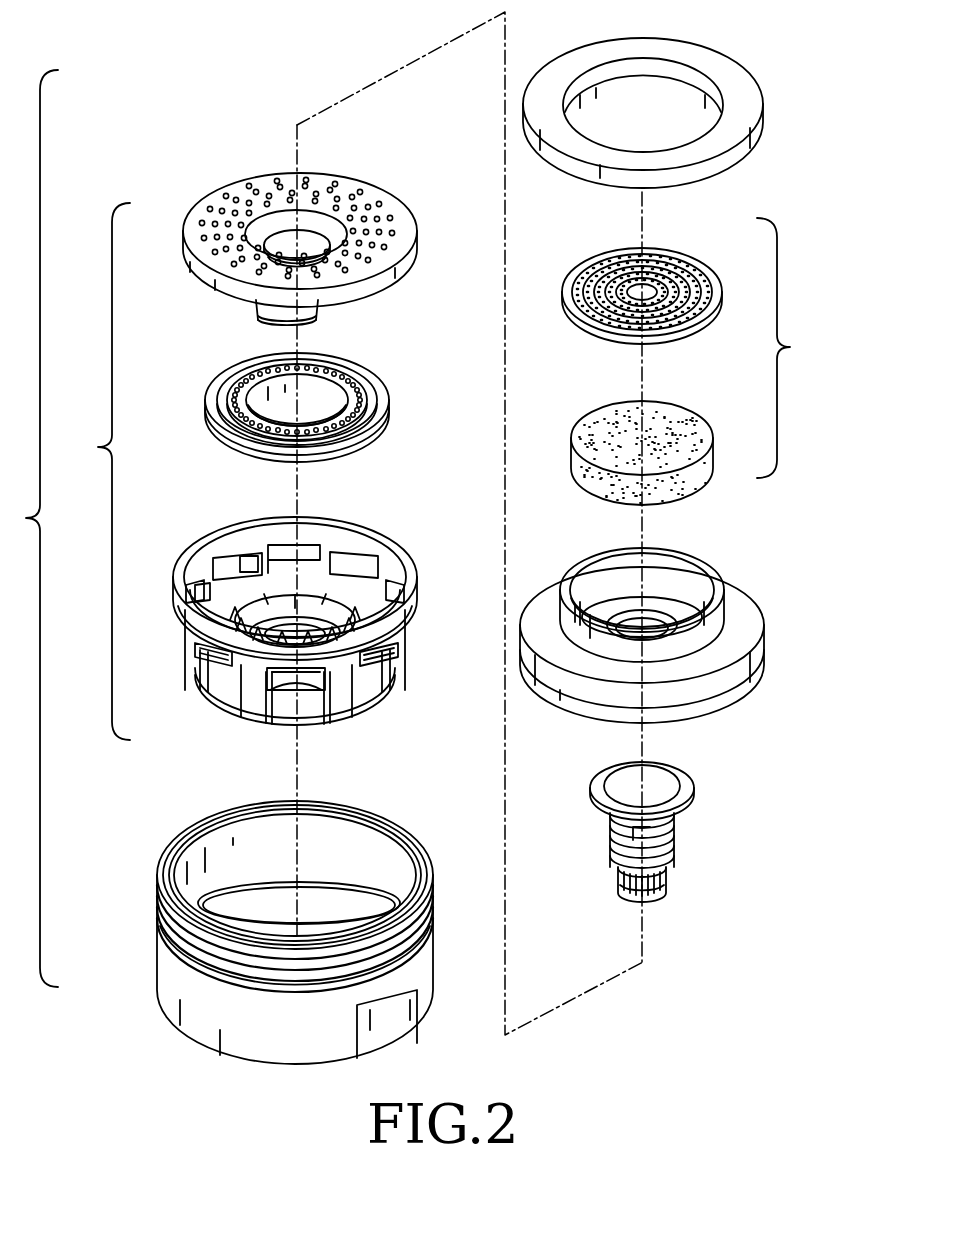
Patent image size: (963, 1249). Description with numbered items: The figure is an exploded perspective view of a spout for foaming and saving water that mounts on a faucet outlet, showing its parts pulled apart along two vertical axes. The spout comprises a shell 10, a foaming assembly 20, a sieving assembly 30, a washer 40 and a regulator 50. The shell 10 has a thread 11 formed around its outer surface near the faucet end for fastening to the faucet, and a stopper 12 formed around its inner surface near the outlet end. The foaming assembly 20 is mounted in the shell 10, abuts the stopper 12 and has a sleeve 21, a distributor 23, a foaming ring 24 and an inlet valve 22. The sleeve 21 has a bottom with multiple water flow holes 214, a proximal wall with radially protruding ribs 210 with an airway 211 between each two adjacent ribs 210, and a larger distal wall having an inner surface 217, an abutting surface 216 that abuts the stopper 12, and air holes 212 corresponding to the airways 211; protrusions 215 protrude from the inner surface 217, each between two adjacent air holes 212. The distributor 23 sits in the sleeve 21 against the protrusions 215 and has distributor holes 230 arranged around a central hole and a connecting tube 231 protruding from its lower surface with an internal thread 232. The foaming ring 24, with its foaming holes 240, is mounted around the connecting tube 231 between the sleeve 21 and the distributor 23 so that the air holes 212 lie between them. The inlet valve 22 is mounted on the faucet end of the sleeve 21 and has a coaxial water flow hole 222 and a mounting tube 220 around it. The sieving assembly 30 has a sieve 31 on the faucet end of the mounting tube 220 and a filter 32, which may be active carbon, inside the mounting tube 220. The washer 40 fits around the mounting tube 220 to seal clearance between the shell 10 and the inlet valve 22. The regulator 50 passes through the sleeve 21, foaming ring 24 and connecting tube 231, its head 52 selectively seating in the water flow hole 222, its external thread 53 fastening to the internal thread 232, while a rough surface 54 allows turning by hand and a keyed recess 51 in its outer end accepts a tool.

The shell 10 is at (325, 934).
The thread 11 is at (427, 910).
The stopper 12 is at (325, 887).
The foaming assembly 20 is at (78, 528).
The sleeve 21 is at (309, 630).
The ribs 210 is at (403, 685).
The airways 211 is at (372, 710).
The air holes 212 is at (308, 552).
The water flow holes 214 is at (313, 617).
The protrusions 215 is at (258, 558).
The abutting surface 216 is at (407, 643).
The inner surface 217 is at (368, 547).
The inlet valve 22 is at (671, 635).
The mounting tube 220 is at (643, 633).
The water flow hole 222 is at (650, 617).
The distributor 23 is at (314, 231).
The distributor holes 230 is at (387, 233).
The connecting tube 231 is at (320, 312).
The internal thread 232 is at (313, 242).
The foaming ring 24 is at (337, 416).
The foaming holes 240 is at (380, 397).
The sieving assembly 30 is at (794, 348).
The sieve 31 is at (687, 262).
The filter 32 is at (687, 427).
The washer 40 is at (717, 67).
The regulator 50 is at (649, 834).
The keyed recess 51 is at (632, 893).
The head 52 is at (632, 785).
The external thread 53 is at (620, 848).
The rough surface 54 is at (660, 885).